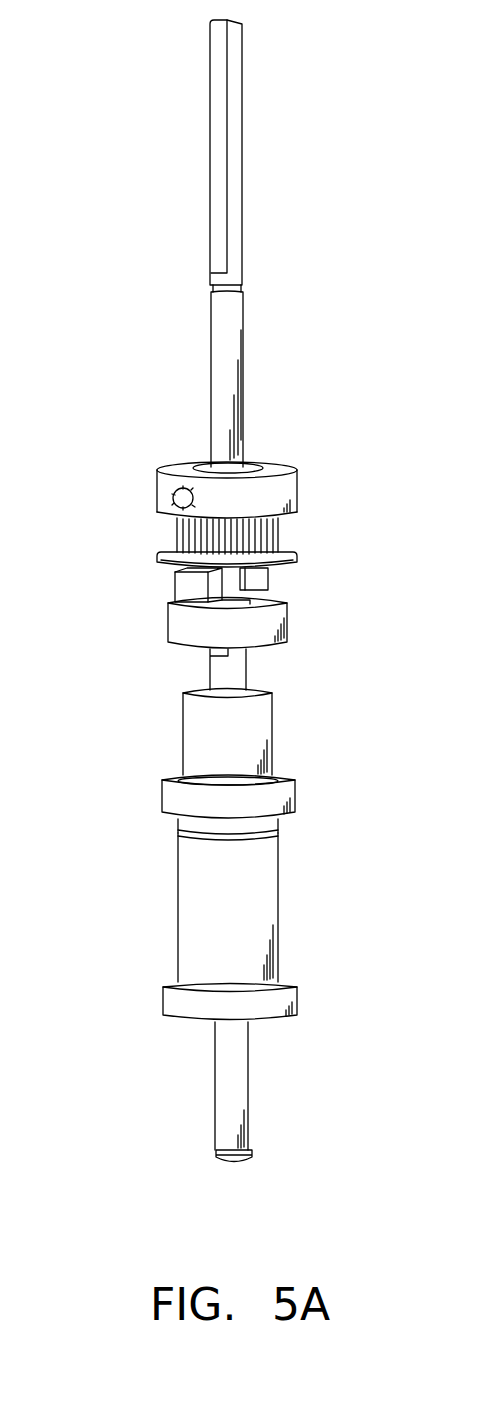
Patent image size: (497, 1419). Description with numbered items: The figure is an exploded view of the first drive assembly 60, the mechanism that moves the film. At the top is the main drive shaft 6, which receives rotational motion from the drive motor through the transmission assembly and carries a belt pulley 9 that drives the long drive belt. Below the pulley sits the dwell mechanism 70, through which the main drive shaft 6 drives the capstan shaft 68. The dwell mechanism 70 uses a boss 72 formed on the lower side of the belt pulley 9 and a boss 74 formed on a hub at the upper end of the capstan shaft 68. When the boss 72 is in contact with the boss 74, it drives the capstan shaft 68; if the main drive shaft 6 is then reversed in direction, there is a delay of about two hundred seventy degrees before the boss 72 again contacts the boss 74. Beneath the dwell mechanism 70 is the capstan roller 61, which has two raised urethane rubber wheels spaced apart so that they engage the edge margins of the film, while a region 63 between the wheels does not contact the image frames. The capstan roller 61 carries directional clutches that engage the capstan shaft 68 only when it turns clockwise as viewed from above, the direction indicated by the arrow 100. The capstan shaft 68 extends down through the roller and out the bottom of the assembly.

The main drive shaft 6 is at (217, 78).
The belt pulley 9 is at (280, 533).
The boss 72 is at (282, 585).
The boss 74 is at (175, 578).
The dwell mechanism 70 is at (115, 542).
The first drive assembly 60 is at (347, 590).
The capstan roller 61 is at (147, 914).
The region 63 is at (280, 878).
The capstan shaft 68 is at (215, 1093).
The arrow 100 is at (233, 1210).